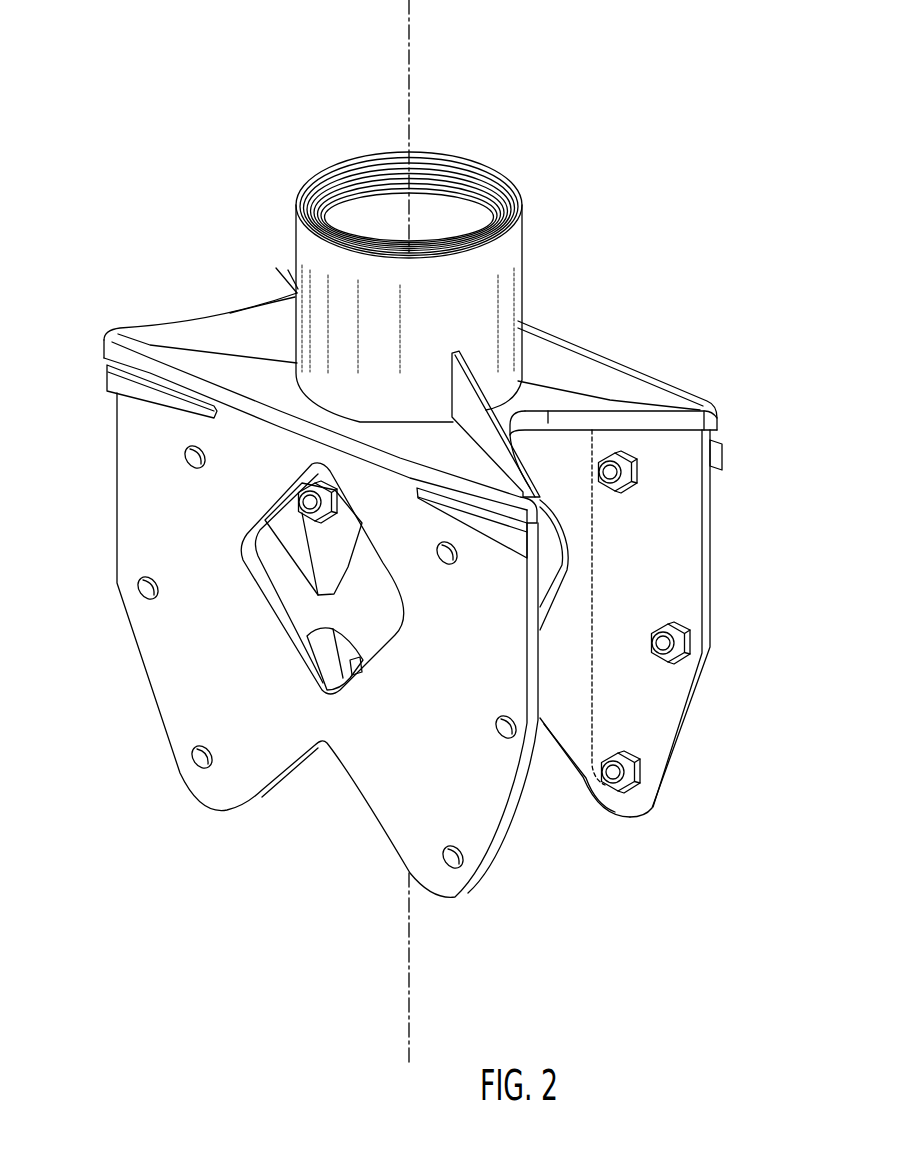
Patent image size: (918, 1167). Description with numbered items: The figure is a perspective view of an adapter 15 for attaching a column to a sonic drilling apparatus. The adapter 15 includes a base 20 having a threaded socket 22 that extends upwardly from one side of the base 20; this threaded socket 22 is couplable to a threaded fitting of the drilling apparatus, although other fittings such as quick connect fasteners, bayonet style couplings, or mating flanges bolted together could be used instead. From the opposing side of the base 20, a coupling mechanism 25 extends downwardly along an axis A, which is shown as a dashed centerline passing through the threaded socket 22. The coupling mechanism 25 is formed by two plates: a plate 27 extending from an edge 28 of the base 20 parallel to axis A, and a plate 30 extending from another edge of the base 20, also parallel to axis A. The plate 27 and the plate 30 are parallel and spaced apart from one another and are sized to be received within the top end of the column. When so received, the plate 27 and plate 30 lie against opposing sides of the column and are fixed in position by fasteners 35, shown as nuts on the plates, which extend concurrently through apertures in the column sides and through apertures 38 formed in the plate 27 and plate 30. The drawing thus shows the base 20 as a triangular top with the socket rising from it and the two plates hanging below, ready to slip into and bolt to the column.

The adapter 15 is at (787, 337).
The base 20 is at (533, 312).
The threaded socket 22 is at (487, 181).
The coupling mechanism 25 is at (712, 513).
The plate 27 is at (132, 505).
The edge 28 is at (140, 365).
The plate 30 is at (688, 598).
The fasteners 35 is at (612, 780).
The apertures 38 is at (458, 868).